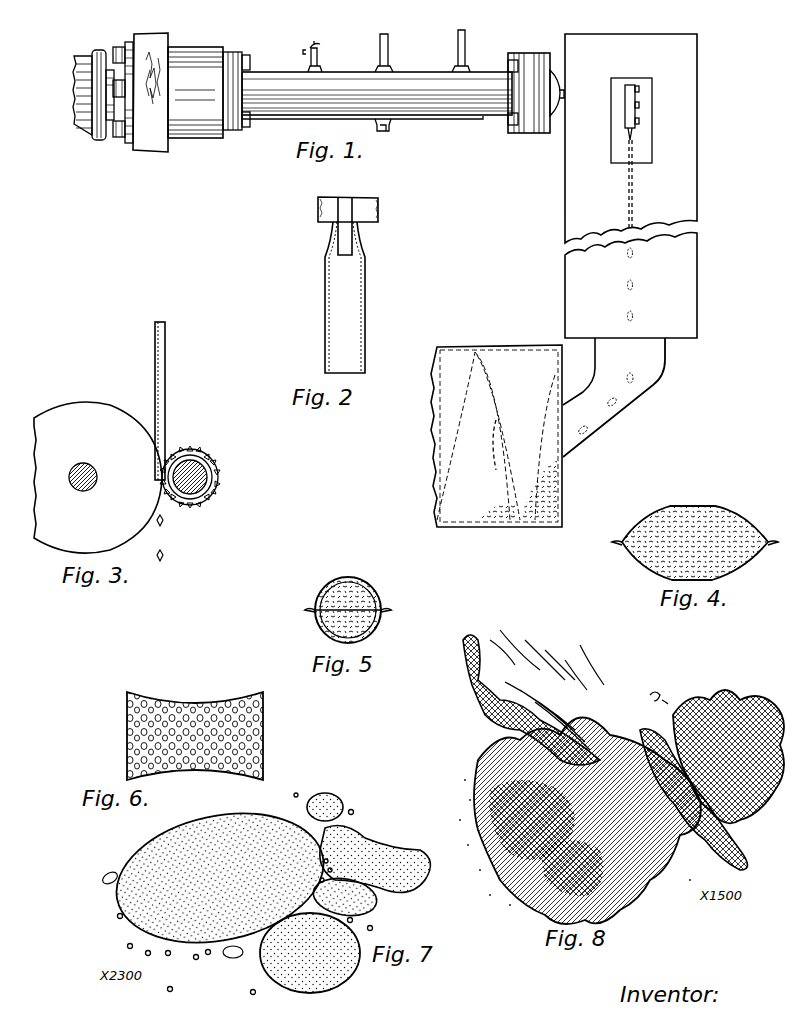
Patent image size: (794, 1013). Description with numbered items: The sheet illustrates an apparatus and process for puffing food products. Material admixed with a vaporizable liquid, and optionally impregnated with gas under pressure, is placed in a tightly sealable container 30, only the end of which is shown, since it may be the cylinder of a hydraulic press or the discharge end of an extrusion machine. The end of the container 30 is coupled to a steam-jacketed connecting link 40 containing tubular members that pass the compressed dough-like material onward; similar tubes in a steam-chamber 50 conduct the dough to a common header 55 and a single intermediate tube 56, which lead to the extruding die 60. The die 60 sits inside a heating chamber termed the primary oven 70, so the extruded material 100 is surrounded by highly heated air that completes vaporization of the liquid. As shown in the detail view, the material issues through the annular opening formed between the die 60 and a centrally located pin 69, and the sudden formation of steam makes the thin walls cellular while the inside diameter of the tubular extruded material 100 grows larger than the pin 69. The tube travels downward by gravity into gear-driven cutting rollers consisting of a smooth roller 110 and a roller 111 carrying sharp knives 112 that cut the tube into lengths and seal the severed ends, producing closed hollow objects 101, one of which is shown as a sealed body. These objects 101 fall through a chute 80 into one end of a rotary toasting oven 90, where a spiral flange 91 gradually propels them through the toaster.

In FIG. 1, the container 30 is at (74, 58).
In FIG. 1, the steam-jacketed connecting link 40 is at (196, 50).
In FIG. 1, the steam-chamber 50 is at (425, 62).
In FIG. 1, the common header 55 is at (554, 82).
In FIG. 1, the intermediate tube 56 is at (618, 96).
In FIG. 1, the extruding die 60 is at (641, 115).
In FIG. 2, the extruding die 60 is at (346, 200).
In FIG. 2, the pin 69 is at (343, 258).
In FIG. 1, the primary oven 70 is at (697, 124).
In FIG. 1, the chute 80 is at (650, 382).
In FIG. 1, the rotary toasting oven 90 is at (561, 495).
In FIG. 1, the spiral flange 91 is at (508, 415).
In FIG. 1, the extruded material 100 is at (672, 196).
In FIG. 2, the extruded material 100 is at (392, 300).
In FIG. 3, the extruded material 100 is at (166, 384).
In FIG. 1, the closed hollow objects 101 is at (635, 410).
In FIG. 3, the closed hollow objects 101 is at (166, 524).
In FIG. 3, the smooth roller 110 is at (112, 400).
In FIG. 3, the roller having knives 111 is at (212, 460).
In FIG. 3, the sharp knives 112 is at (217, 488).